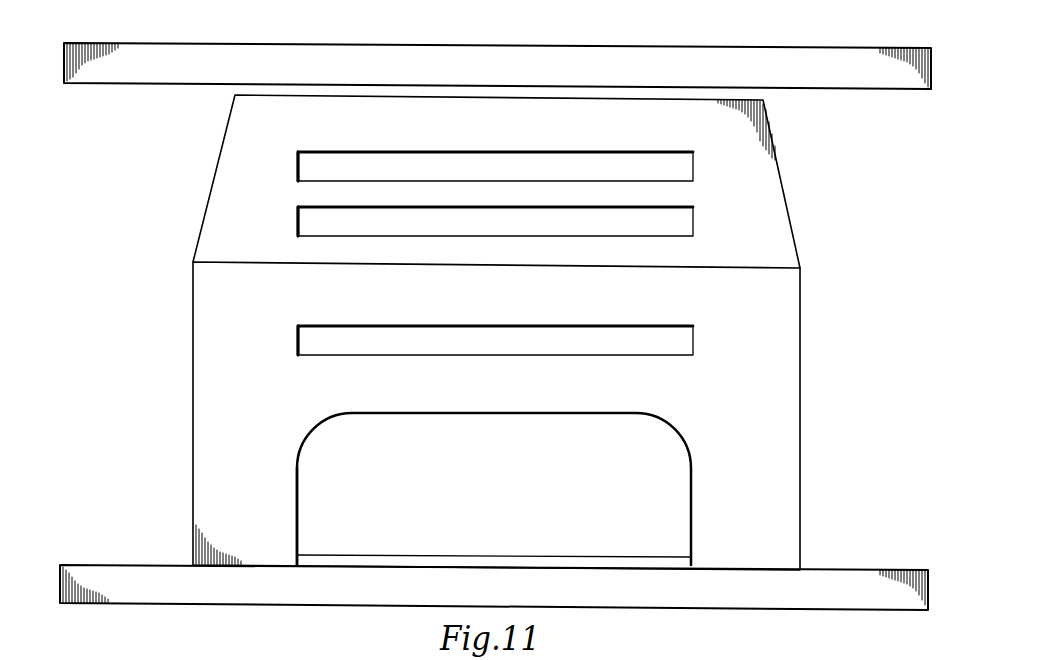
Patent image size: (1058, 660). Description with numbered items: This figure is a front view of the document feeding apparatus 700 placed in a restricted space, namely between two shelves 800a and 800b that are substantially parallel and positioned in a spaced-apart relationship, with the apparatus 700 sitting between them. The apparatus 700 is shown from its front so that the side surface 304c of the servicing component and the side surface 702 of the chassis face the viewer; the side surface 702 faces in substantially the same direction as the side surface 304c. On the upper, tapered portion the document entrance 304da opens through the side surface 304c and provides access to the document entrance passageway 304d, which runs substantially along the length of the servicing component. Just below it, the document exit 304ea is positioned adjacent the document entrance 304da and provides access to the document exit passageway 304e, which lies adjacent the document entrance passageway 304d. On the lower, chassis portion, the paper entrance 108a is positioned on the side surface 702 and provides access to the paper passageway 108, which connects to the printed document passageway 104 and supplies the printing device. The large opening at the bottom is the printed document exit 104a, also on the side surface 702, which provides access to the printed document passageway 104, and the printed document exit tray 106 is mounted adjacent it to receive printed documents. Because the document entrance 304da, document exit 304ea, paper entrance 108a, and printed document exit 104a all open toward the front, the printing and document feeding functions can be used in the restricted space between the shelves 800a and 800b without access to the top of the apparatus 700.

The shelf 800a is at (110, 86).
The shelf 800b is at (112, 563).
The document feeding apparatus 700 is at (513, 332).
The side surface 702 is at (201, 430).
The side surface 304c is at (233, 149).
The document entrance passageway 304d is at (685, 173).
The document entrance 304da is at (300, 160).
The document exit passageway 304e is at (685, 226).
The document exit 304ea is at (298, 232).
The paper passageway 108 is at (685, 347).
The paper entrance 108a is at (298, 348).
The printed document passageway 104 is at (510, 504).
The printed document exit 104a is at (297, 497).
The printed document exit tray 106 is at (538, 555).